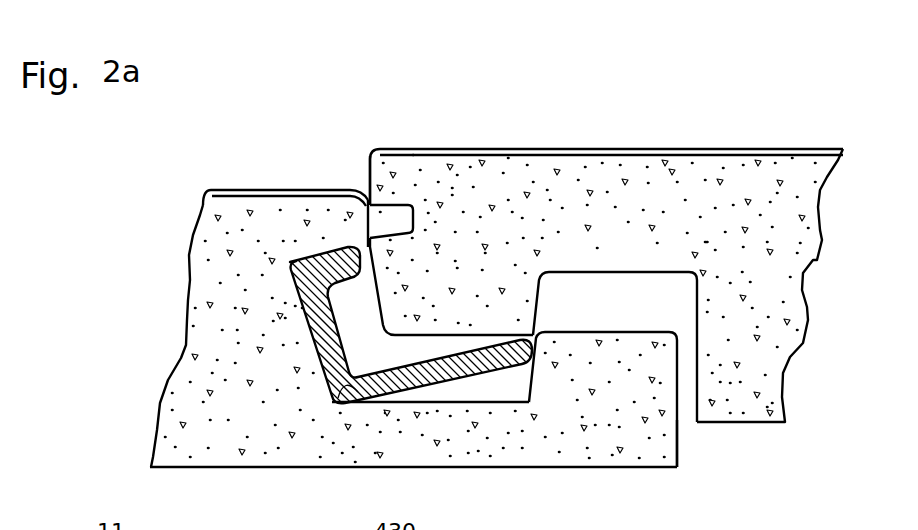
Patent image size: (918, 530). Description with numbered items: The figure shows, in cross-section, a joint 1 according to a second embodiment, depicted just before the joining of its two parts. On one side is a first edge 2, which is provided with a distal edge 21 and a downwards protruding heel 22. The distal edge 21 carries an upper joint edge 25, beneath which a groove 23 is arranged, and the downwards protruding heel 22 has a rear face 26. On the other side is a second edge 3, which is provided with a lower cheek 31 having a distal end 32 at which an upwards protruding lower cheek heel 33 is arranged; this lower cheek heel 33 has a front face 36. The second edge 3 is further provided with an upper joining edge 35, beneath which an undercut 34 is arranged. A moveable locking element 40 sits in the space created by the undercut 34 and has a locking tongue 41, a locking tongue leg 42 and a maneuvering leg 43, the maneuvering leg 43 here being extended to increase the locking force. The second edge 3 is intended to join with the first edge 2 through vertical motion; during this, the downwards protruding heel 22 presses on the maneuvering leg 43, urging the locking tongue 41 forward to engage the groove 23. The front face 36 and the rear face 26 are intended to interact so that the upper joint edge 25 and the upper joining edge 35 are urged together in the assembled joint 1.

The joint 1 is at (490, 34).
The first edge 2 is at (492, 170).
The distal edge 21 is at (368, 149).
The downwards protruding heel 22 is at (488, 302).
The groove 23 is at (395, 217).
The upper joint edge 25 is at (362, 168).
The rear face 26 is at (543, 291).
The second edge 3 is at (204, 200).
The lower cheek 31 is at (455, 431).
The distal end 32 is at (679, 450).
The lower cheek heel 33 is at (633, 382).
The undercut 34 is at (357, 305).
The upper joining edge 35 is at (368, 183).
The front face 36 is at (516, 380).
The moveable locking element 40 is at (337, 402).
The locking tongue 41 is at (292, 263).
The locking tongue leg 42 is at (320, 345).
The maneuvering leg 43 is at (413, 382).